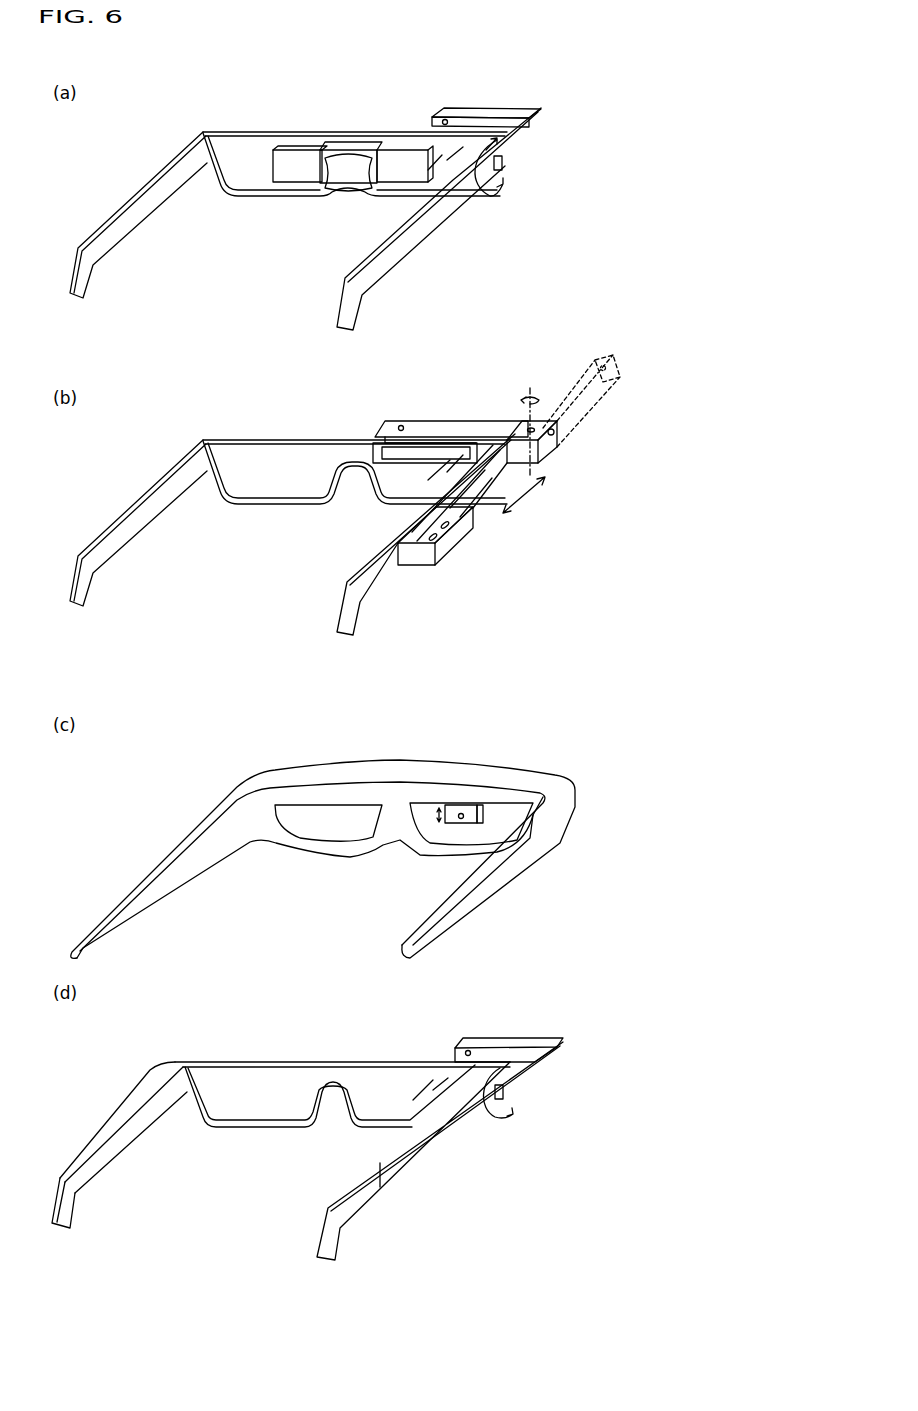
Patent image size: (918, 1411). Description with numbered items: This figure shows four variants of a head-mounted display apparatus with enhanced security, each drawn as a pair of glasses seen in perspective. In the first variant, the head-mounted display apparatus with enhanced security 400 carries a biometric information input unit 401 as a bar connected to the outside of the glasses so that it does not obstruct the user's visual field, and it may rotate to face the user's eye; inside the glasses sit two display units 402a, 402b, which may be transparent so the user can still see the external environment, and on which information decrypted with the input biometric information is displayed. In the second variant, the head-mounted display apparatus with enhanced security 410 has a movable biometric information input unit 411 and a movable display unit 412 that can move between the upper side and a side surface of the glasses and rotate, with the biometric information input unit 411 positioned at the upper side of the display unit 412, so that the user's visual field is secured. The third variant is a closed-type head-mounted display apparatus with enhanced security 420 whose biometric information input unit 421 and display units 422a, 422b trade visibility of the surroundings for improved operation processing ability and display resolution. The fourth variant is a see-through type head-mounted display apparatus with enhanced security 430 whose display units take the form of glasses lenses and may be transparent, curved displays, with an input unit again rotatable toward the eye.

The head-mounted display apparatus with enhanced security 400 is at (563, 65).
The biometric information input unit 401 is at (443, 112).
The display unit 402a is at (300, 174).
The display unit 402b is at (398, 176).
The head-mounted display apparatus with enhanced security 410 is at (563, 342).
The biometric information input unit 411 is at (401, 420).
The display unit 412 is at (412, 452).
The closed-type head-mounted display apparatus with enhanced security 420 is at (563, 702).
The biometric information input unit 421 is at (469, 806).
The display unit 422a is at (330, 823).
The display unit 422b is at (452, 832).
The see-through type head-mounted display apparatus with enhanced security 430 is at (563, 982).